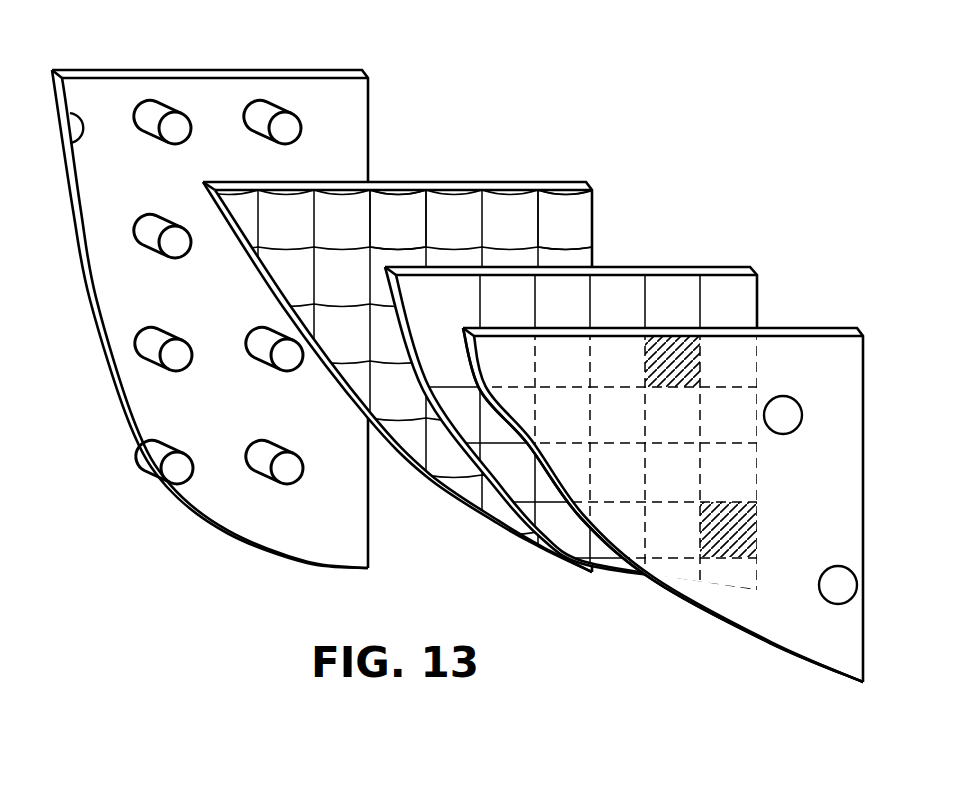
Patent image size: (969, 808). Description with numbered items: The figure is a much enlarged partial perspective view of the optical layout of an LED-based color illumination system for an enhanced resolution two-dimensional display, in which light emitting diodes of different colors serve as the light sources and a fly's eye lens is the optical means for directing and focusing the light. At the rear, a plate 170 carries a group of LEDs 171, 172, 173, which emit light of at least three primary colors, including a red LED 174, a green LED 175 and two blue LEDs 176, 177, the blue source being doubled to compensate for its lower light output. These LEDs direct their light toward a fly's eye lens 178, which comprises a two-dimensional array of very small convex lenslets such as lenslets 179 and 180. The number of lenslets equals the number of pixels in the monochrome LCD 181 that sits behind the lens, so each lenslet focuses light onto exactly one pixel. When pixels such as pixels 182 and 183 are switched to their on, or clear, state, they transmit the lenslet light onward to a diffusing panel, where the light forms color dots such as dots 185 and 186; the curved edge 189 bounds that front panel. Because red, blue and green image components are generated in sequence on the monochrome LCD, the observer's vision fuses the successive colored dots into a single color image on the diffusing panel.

The base plate 170 is at (353, 70).
The locating pin 171 is at (167, 112).
The locating pin 172 is at (274, 112).
The locating pin 173 is at (172, 252).
The red LED 174 is at (168, 368).
The green LED 175 is at (289, 362).
The blue LED 176 is at (166, 487).
The blue LED 177 is at (303, 480).
The fly's eye lens 178 is at (423, 357).
The lenslet 179 is at (400, 200).
The lenslet 180 is at (560, 208).
The LCD 181 is at (643, 266).
The pixel 182 is at (668, 327).
The pixel 183 is at (722, 565).
The color dot 185 is at (787, 396).
The color dot 186 is at (826, 598).
The curved edge 189 is at (827, 672).